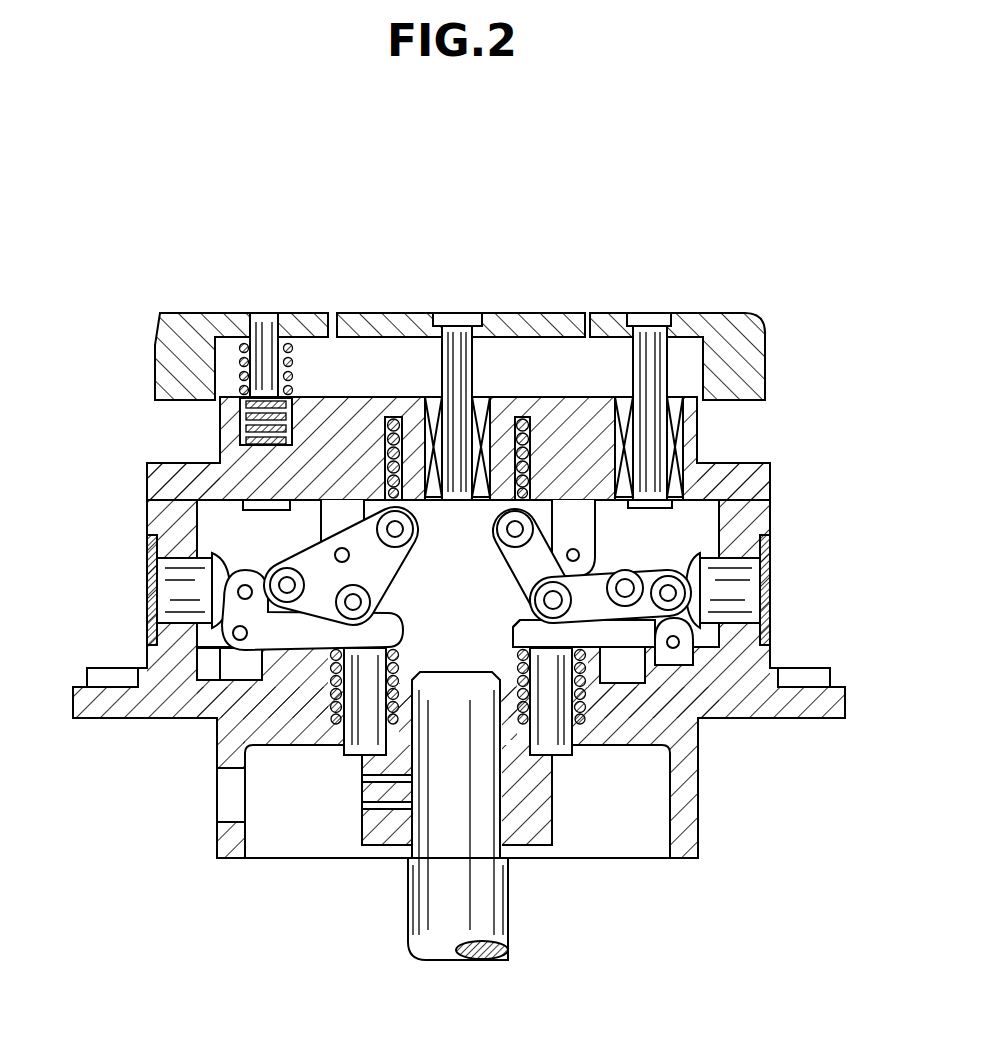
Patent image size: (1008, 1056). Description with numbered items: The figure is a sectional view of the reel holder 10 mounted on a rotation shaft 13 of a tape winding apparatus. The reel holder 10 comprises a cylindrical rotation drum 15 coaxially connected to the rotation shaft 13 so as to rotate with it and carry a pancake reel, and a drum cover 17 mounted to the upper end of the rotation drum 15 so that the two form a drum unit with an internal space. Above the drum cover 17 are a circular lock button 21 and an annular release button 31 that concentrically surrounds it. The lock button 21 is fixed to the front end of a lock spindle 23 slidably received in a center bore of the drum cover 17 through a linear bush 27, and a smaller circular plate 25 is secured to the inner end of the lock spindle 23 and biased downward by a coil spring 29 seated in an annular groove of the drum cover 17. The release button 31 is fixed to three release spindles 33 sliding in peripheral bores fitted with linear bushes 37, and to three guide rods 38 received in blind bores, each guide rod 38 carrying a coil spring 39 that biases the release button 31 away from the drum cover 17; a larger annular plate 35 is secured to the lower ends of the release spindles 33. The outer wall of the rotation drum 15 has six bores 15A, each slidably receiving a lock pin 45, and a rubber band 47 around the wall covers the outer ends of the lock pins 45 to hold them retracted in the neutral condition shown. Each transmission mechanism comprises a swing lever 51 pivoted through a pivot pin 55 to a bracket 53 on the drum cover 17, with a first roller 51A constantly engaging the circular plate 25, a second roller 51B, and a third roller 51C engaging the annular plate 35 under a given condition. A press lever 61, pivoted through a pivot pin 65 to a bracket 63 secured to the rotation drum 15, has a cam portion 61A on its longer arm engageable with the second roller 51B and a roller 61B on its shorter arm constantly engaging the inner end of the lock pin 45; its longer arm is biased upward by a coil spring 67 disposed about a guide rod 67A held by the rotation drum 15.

The reel holder 10 is at (676, 188).
The rotation shaft 13 is at (422, 915).
The rotation drum 15 is at (687, 837).
The bores 15A is at (175, 600).
The drum cover 17 is at (147, 487).
The lock button 21 is at (527, 313).
The lock spindle 23 is at (453, 362).
The circular plate 25 is at (387, 499).
The linear bush 27 is at (425, 400).
The coil spring 29 is at (390, 497).
The release button 31 is at (705, 315).
The release spindles 33 is at (653, 373).
The annular plate 35 is at (700, 470).
The linear bushes 37 is at (700, 423).
The guide rods 38 is at (265, 357).
The coil spring 39 is at (240, 355).
The lock pin 45 is at (200, 582).
The rubber band 47 is at (767, 613).
The swing lever 51 is at (297, 547).
The first roller 51A is at (513, 533).
The second roller 51B is at (550, 602).
The third roller 51C is at (622, 600).
The bracket 53 is at (515, 529).
The pivot pin 55 is at (580, 555).
The press lever 61 is at (287, 650).
The cam portion 61A is at (513, 635).
The roller 61B is at (693, 635).
The bracket 63 is at (673, 657).
The pivot pin 65 is at (240, 633).
The coil spring 67 is at (330, 725).
The guide rod 67A is at (353, 742).